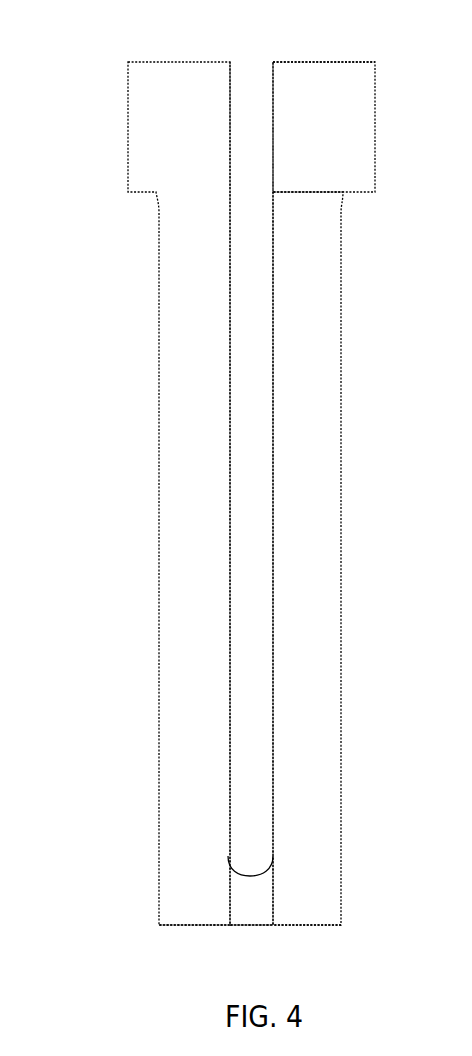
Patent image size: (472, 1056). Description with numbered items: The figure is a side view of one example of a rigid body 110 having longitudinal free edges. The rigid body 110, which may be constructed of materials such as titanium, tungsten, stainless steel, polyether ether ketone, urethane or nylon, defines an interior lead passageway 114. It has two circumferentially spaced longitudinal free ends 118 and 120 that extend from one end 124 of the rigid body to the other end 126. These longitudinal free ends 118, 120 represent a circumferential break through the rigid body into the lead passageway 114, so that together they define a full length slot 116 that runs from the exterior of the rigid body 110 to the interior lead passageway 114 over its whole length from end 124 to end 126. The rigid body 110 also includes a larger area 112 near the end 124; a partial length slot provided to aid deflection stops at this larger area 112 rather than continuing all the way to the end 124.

The rigid body 110 is at (223, 483).
The larger area 112 is at (361, 108).
The lead passageway 114 is at (253, 63).
The slot 116 is at (253, 333).
The longitudinal free end 118 is at (275, 452).
The longitudinal free end 120 is at (229, 557).
The end 124 is at (356, 62).
The end 126 is at (185, 926).